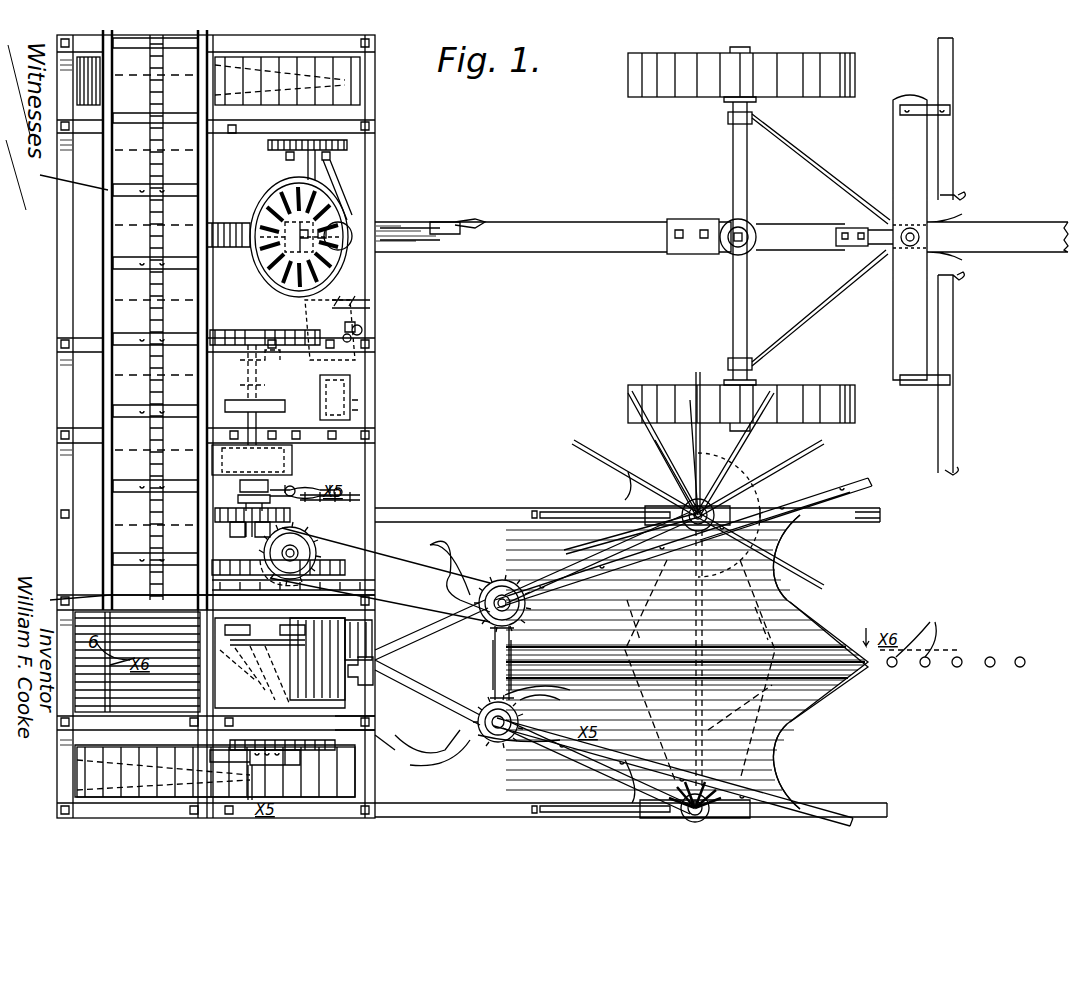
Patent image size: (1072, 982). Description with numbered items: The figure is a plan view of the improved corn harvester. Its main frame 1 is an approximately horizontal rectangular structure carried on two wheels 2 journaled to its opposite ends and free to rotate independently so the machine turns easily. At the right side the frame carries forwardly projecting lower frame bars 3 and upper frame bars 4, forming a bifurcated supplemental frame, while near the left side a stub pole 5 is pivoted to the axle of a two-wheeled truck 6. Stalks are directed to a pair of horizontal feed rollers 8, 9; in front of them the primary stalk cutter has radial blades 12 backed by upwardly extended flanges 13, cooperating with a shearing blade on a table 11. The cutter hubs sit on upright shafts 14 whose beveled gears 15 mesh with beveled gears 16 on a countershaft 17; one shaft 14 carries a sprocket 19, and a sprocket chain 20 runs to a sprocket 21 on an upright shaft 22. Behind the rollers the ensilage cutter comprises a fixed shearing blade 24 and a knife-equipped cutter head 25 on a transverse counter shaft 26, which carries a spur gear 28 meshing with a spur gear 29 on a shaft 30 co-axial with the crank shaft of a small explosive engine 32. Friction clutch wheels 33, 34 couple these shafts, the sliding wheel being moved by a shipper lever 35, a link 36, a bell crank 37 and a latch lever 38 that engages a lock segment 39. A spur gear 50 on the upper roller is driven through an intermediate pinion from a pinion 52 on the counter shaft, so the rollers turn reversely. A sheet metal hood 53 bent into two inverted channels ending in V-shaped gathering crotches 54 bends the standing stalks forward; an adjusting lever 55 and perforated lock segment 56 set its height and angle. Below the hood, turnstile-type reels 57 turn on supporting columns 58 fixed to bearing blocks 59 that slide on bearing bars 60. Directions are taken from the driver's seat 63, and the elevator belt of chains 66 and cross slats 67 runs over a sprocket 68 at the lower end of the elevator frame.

The main frame 1 is at (372, 492).
The wheels 2 is at (150, 800).
The lower frame bars 3 is at (445, 508).
The upper frame bars 4 is at (140, 730).
The stub pole 5 is at (465, 228).
The two-wheeled truck 6 is at (815, 265).
The feed roller 8 is at (300, 660).
The upper feed roller 9 is at (355, 655).
The table 11 is at (380, 739).
The radial blades 12 is at (455, 560).
The upwardly extended flanges 13 is at (440, 560).
The upright shafts 14 is at (470, 562).
The beveled gears 15 is at (545, 705).
The beveled gears 16 is at (520, 690).
The countershaft 17 is at (512, 655).
The sprocket 19 is at (570, 590).
The sprocket chain 20 is at (480, 545).
The sprocket 21 is at (355, 538).
The upright shaft 22 is at (316, 553).
The fixed shearing blade 24 is at (265, 760).
The cutter head 25 is at (255, 632).
The transverse counter shaft 26 is at (280, 640).
The spur gear 28 is at (362, 497).
The spur gear 29 is at (260, 518).
The shaft 30 is at (235, 525).
The explosive engine 32 is at (245, 355).
The friction clutch wheel 33 is at (245, 490).
The friction clutch wheel 34 is at (222, 453).
The shipper lever 35 is at (300, 490).
The link 36 is at (345, 425).
The bell crank 37 is at (345, 325).
The latch lever 38 is at (352, 290).
The lock segment 39 is at (365, 325).
The spur gear 50 is at (345, 568).
The pinion 52 is at (215, 585).
The hood 53 is at (810, 685).
The gathering crotches 54 is at (790, 545).
The adjusting lever 55 is at (350, 726).
The perforated lock segment 56 is at (350, 680).
The reels 57 is at (752, 480).
The supporting columns 58 is at (680, 500).
The bearing blocks 59 is at (650, 505).
The bearing bars 60 is at (855, 505).
The driver's seat 63 is at (300, 230).
The chains 66 is at (150, 285).
The cross slats 67 is at (110, 180).
The sprocket 68 is at (210, 592).